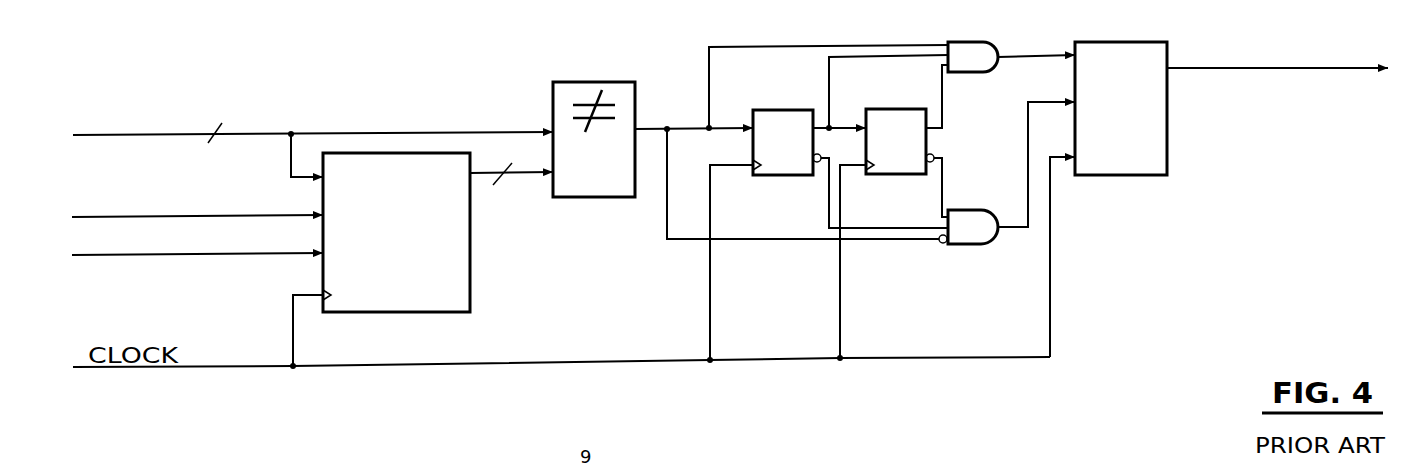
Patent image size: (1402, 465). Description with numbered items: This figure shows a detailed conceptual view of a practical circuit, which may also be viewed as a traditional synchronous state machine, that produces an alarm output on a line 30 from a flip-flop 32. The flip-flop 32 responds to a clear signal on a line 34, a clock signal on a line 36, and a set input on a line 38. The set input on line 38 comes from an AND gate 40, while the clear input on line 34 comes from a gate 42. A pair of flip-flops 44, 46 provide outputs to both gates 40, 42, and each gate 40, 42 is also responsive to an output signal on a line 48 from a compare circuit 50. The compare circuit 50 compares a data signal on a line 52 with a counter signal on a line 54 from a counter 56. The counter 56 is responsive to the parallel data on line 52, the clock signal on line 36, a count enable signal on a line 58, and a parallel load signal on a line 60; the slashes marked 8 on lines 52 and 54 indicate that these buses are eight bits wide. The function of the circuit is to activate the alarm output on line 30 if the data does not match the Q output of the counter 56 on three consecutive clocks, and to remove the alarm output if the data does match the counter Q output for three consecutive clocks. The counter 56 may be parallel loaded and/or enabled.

The bus width indicator 8 is at (355, 162).
The line 30 is at (1273, 70).
The flip-flop 32 is at (1115, 41).
The line 34 is at (1028, 127).
The line 36 is at (1050, 235).
The line 38 is at (1030, 52).
The AND gate 40 is at (968, 41).
The gate 42 is at (968, 210).
The flip-flop 44 is at (783, 108).
The flip-flop 46 is at (900, 175).
The line 48 is at (652, 124).
The compare circuit 50 is at (592, 82).
The line 52 is at (425, 128).
The line 54 is at (530, 178).
The counter 56 is at (470, 278).
The line 58 is at (175, 257).
The line 60 is at (73, 214).